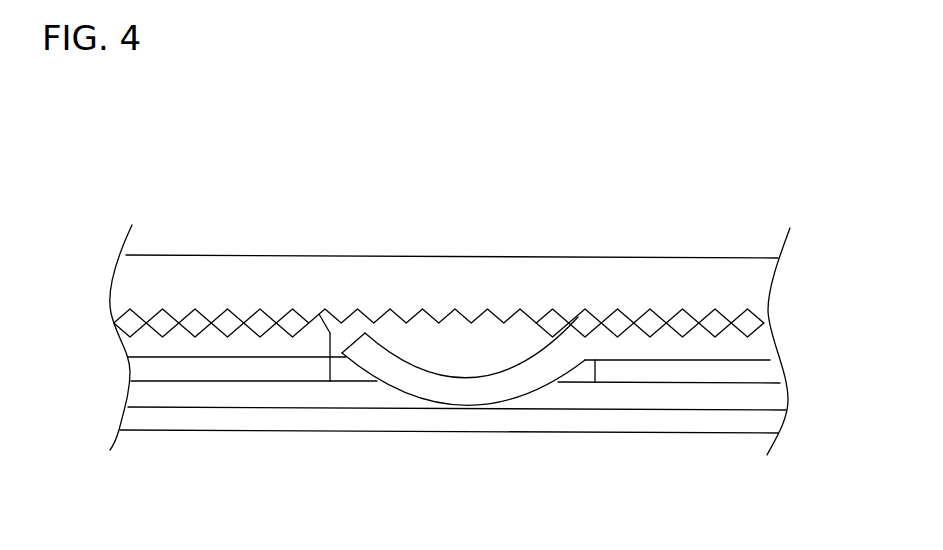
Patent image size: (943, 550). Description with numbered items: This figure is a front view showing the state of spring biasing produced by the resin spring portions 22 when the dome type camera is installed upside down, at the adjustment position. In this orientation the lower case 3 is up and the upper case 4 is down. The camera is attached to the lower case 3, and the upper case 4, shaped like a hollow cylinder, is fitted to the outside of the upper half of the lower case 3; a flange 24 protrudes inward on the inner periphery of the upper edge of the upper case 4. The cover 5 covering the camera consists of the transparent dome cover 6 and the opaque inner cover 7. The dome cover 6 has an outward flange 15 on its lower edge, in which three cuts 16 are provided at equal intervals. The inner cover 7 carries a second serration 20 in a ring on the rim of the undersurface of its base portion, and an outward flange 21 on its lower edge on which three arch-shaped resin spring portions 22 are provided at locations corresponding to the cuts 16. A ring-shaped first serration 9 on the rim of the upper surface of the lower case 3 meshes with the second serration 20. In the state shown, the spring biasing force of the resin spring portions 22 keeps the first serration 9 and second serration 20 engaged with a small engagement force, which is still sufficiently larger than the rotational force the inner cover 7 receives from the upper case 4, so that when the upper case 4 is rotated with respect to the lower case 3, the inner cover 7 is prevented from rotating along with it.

The lower case 3 is at (195, 255).
The second serration 20 is at (618, 330).
The first serration 9 is at (653, 328).
The resin spring portion 22 is at (382, 387).
The inner cover 7 is at (150, 358).
The dome cover 6 is at (188, 381).
The cover 5 is at (183, 483).
The upper case 4 is at (233, 433).
The cut 16 is at (580, 373).
The flange 21 is at (768, 361).
The flange 15 is at (747, 383).
The flange 24 is at (692, 433).